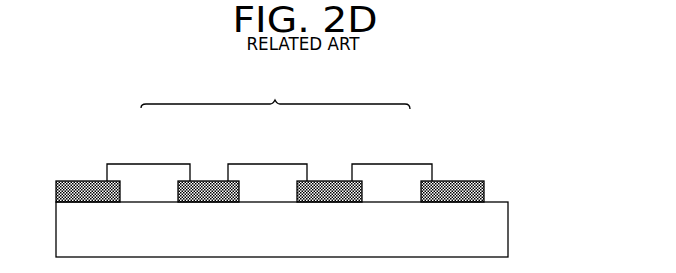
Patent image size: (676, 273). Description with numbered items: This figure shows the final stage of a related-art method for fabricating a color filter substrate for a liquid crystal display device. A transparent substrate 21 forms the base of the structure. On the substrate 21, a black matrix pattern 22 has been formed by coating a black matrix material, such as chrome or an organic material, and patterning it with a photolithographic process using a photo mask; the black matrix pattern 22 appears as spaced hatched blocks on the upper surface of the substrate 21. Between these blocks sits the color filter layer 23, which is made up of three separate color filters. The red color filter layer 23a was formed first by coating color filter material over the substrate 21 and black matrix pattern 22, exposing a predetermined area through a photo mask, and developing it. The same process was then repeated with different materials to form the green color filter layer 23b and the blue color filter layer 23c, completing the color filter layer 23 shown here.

The transparent substrate 21 is at (503, 232).
The black matrix pattern 22 is at (484, 187).
The color filter layer 23 is at (275, 95).
The red color filter layer 23a is at (151, 167).
The green color filter layer 23b is at (272, 167).
The blue color filter layer 23c is at (397, 167).